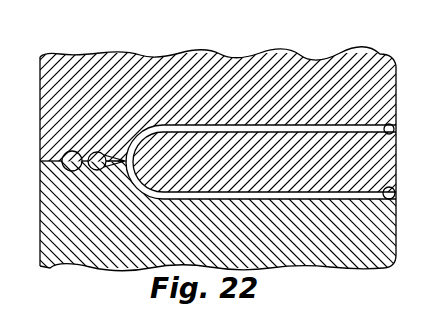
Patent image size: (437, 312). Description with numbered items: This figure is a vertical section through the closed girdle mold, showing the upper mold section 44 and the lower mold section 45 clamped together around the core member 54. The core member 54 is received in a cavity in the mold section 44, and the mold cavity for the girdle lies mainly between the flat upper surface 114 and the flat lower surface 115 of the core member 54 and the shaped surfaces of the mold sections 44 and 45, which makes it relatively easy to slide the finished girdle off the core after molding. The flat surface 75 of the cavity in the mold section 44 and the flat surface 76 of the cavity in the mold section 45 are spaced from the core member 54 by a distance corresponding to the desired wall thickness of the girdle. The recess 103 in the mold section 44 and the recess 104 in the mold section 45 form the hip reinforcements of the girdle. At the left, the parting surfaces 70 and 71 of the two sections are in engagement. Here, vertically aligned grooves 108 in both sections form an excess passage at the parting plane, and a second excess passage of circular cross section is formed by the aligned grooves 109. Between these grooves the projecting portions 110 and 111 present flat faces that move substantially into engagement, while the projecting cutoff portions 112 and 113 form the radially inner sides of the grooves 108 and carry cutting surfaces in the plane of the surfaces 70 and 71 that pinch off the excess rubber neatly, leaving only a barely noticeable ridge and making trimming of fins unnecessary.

The mold section 44 is at (200, 55).
The mold section 45 is at (297, 262).
The core member 54 is at (325, 173).
The surface 70 is at (40, 157).
The surface 71 is at (41, 167).
The flat surface 75 is at (398, 138).
The flat surface 76 is at (397, 192).
The recess 103 is at (217, 125).
The recess 104 is at (217, 199).
The grooves 108 is at (96, 171).
The grooves 109 is at (68, 150).
The projecting portion 110 is at (82, 152).
The projecting portion 111 is at (65, 172).
The projecting cutoff portion 112 is at (125, 150).
The projecting cutoff portion 113 is at (125, 197).
The flat upper surface 114 is at (277, 131).
The flat lower surface 115 is at (193, 199).